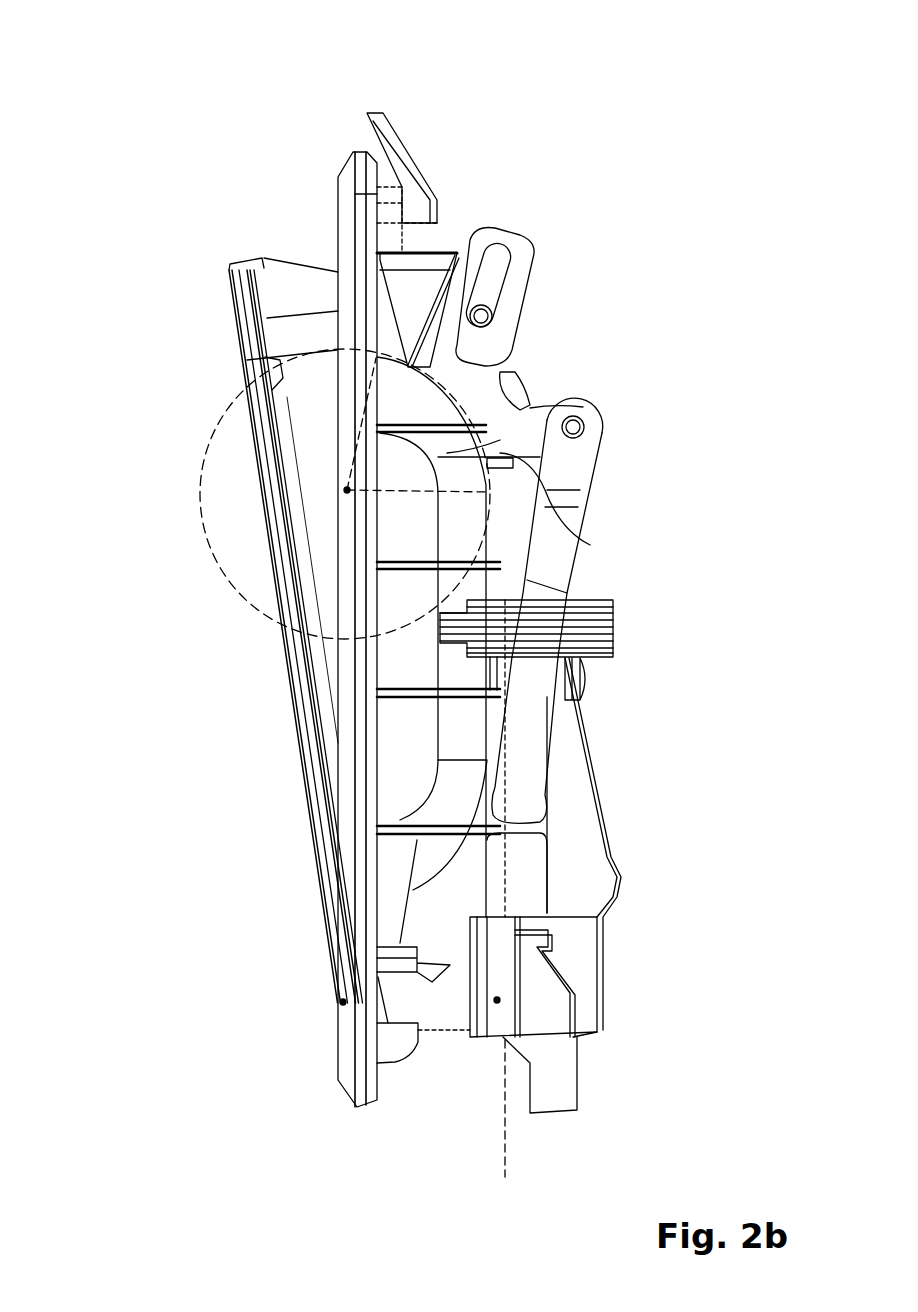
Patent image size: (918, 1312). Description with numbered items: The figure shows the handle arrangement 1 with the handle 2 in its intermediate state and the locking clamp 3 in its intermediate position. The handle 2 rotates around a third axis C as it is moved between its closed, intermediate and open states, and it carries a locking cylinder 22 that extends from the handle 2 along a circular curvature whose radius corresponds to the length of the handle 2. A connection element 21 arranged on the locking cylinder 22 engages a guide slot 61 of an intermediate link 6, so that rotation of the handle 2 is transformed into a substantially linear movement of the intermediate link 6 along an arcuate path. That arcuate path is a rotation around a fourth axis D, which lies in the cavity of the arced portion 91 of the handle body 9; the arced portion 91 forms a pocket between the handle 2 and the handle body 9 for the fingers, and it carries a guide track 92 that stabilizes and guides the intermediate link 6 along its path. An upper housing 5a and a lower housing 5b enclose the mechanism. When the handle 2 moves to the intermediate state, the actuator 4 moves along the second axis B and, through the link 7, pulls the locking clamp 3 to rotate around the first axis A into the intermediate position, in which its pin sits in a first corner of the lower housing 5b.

The handle arrangement 1 is at (203, 134).
The handle 2 is at (257, 287).
The locking cylinder 22 is at (300, 277).
The handle body 9 is at (347, 177).
The connection element 21 is at (477, 278).
The intermediate link 6 is at (460, 378).
The guide slot 61 is at (500, 262).
The arced portion 91 is at (525, 400).
The actuator 4 is at (567, 473).
The guide track 92 is at (570, 540).
The link 7 is at (543, 817).
The upper housing 5a is at (587, 848).
The lower housing 5b is at (478, 1028).
The locking clamp 3 is at (567, 1077).
The first axis A is at (497, 1000).
The second axis B is at (487, 1123).
The third axis C is at (343, 1002).
The fourth axis D is at (345, 494).